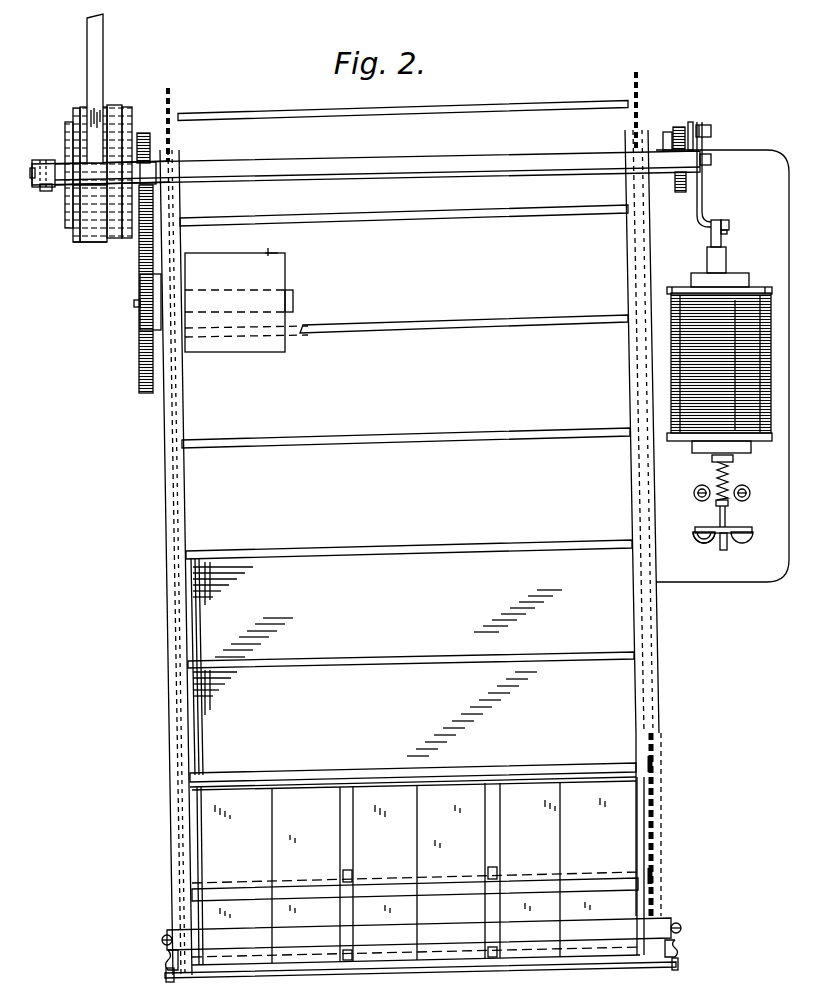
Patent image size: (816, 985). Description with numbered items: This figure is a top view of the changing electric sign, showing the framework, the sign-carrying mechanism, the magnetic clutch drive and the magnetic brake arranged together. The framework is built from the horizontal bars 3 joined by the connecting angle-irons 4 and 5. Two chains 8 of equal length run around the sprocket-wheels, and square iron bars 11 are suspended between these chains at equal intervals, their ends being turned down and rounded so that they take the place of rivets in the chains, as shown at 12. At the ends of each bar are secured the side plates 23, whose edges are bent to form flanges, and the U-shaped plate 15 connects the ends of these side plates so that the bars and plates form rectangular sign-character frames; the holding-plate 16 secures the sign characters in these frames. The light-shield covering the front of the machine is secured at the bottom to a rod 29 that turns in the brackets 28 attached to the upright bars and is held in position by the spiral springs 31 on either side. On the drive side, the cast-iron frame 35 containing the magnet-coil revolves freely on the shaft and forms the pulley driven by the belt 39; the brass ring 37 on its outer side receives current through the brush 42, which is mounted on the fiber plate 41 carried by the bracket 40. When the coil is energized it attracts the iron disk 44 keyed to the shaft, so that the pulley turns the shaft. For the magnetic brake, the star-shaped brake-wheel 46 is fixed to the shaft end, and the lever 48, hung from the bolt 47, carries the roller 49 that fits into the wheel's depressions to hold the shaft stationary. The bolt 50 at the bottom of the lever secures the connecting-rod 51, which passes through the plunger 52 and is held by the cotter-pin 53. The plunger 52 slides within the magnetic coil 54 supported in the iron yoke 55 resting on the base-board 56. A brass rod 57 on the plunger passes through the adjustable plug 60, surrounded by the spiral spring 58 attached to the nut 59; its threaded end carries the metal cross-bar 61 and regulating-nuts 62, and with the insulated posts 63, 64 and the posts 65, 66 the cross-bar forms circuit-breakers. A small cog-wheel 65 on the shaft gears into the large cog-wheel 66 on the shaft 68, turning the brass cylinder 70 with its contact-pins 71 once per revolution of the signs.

The horizontal bar 3 is at (366, 550).
The connecting angle-iron 4 is at (176, 622).
The connecting angle-iron 5 is at (650, 637).
The chain 8 is at (656, 828).
The square iron bar 11 is at (412, 112).
The turned-down bar end 12 is at (169, 118).
The U-shaped plate 15 is at (590, 778).
The holding-plate 16 is at (499, 830).
The side plate 23 is at (630, 831).
The bracket 28 is at (166, 962).
The rod 29 is at (166, 975).
The spiral spring 31 is at (162, 940).
The cast-iron frame 35 is at (80, 105).
The brass ring 37 is at (74, 115).
The belt 39 is at (103, 62).
The bracket 40 is at (112, 173).
The fiber plate 41 is at (46, 170).
The brush 42 is at (66, 140).
The iron disk 44 is at (125, 105).
The star-shaped brake-wheel 46 is at (679, 192).
The bolt 47 is at (711, 160).
The lever 48 is at (691, 122).
The roller 49 is at (678, 127).
The bolt 50 is at (712, 131).
The connecting-rod 51 is at (703, 212).
The plunger 52 is at (707, 262).
The cotter-pin 53 is at (729, 222).
The magnetic coil 54 is at (719, 364).
The iron yoke 55 is at (691, 278).
The base-board 56 is at (741, 230).
The brass rod 57 is at (726, 516).
The spiral spring 58 is at (730, 482).
The nut 59 is at (716, 504).
The adjustable plug 60 is at (712, 460).
The metal cross-bar 61 is at (752, 530).
The regulating-nut 62 is at (720, 545).
The insulated metal post 63 is at (750, 493).
The insulated metal post 64 is at (694, 494).
The small cog-wheel 65 is at (144, 133).
The large cog-wheel 66 is at (141, 265).
The shaft 68 is at (134, 305).
The brass cylinder 70 is at (246, 302).
The contact-pin 71 is at (271, 251).